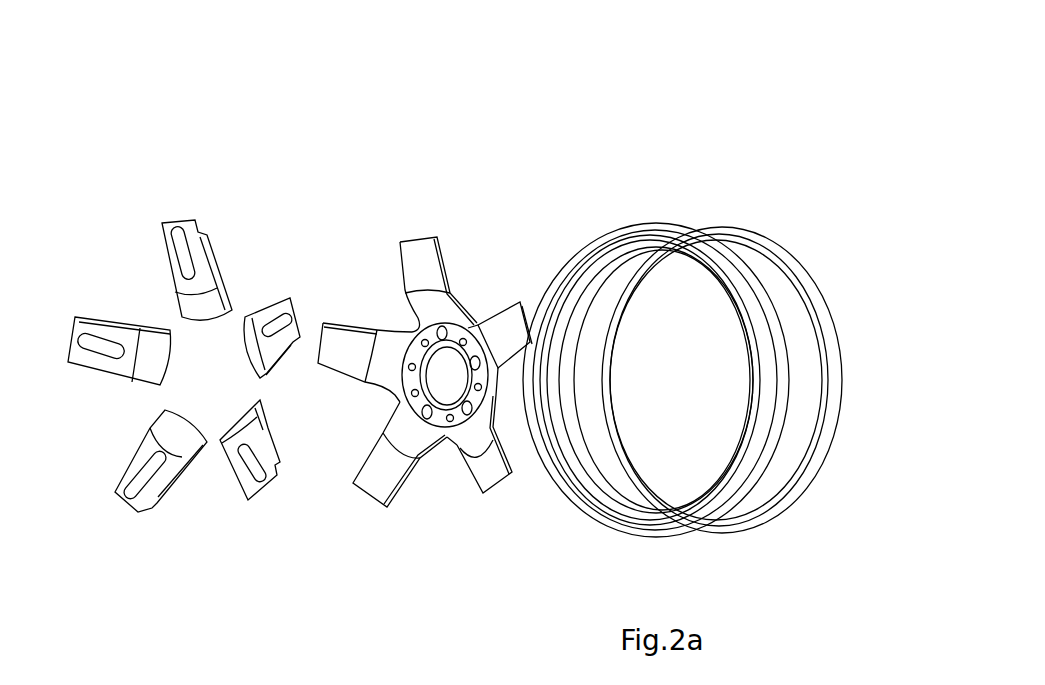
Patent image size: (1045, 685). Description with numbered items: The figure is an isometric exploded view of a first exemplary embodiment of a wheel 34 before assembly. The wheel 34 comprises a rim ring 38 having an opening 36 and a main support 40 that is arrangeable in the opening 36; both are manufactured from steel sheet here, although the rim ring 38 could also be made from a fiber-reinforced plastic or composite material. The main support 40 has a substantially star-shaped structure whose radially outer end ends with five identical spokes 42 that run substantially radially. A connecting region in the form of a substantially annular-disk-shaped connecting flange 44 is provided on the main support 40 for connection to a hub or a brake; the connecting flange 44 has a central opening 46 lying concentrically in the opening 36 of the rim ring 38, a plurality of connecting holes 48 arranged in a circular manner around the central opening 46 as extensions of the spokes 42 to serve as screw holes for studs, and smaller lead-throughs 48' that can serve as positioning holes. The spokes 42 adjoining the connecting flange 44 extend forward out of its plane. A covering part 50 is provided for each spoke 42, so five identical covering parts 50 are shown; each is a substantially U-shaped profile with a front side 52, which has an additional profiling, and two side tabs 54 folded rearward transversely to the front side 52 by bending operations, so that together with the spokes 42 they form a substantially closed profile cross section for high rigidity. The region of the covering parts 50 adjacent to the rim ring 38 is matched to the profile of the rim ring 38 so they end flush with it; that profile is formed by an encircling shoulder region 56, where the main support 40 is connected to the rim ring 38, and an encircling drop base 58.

The wheel 34 is at (211, 96).
The opening 36 is at (641, 330).
The rim ring 38 is at (639, 190).
The main support 40 is at (407, 205).
The spokes 42 is at (413, 258).
The connecting flange 44 is at (445, 453).
The central opening 46 is at (450, 365).
The connecting holes 48 is at (412, 349).
The lead-throughs 48' is at (399, 385).
The covering parts 50 is at (118, 330).
The front side 52 is at (165, 222).
The side tabs 54 is at (207, 243).
The shoulder region 56 is at (597, 525).
The drop base 58 is at (733, 512).